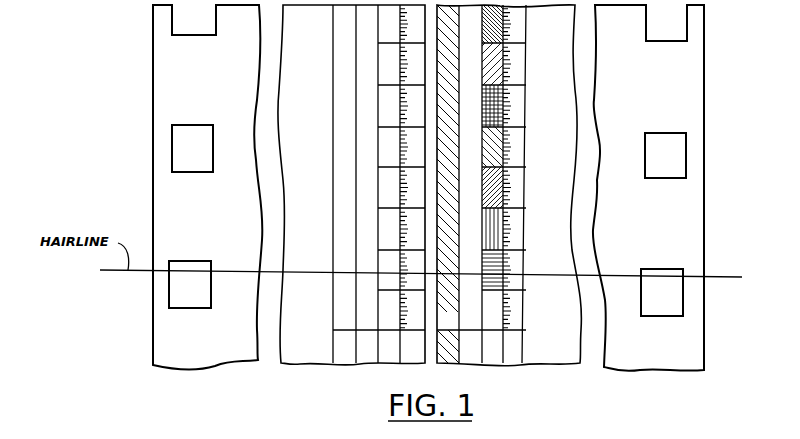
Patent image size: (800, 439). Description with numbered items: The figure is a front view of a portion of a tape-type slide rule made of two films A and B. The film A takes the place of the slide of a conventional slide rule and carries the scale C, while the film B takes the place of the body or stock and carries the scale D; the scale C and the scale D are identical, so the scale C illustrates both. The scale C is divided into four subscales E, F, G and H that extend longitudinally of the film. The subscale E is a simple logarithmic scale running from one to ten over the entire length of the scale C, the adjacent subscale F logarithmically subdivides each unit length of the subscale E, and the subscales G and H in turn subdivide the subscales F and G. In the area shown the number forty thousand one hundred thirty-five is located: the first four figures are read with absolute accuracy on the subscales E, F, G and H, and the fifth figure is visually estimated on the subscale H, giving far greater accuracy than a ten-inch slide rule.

The film A is at (172, 96).
The film B is at (672, 106).
The scale C is at (333, 98).
The scale D is at (527, 100).
The subscale E is at (443, 356).
The subscale F is at (466, 356).
The subscale G is at (490, 356).
The subscale H is at (512, 356).